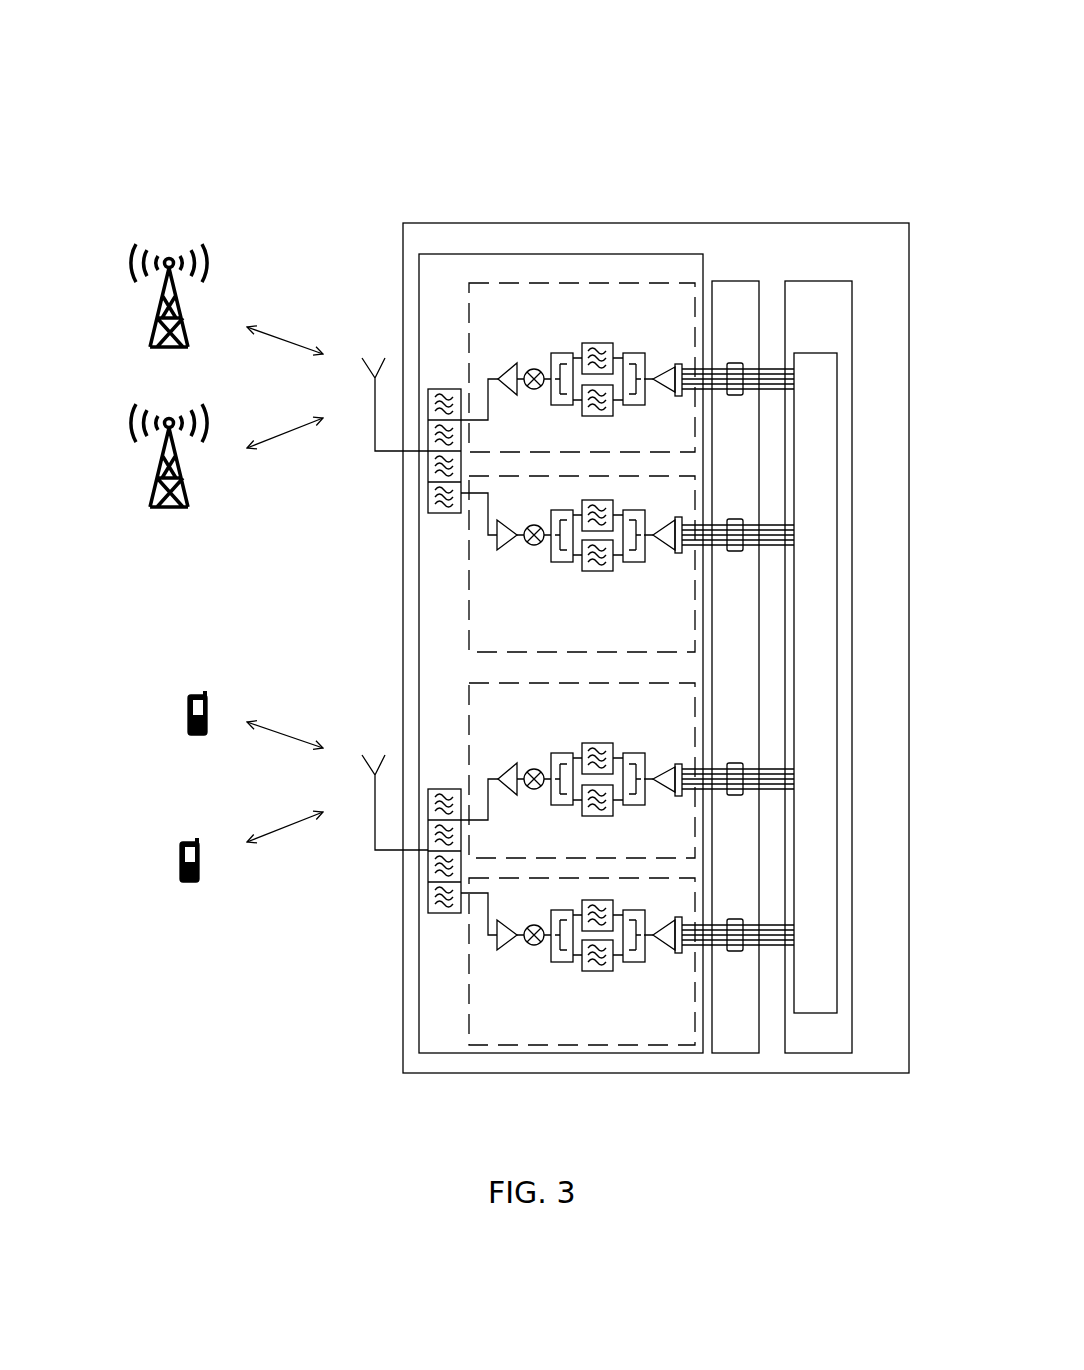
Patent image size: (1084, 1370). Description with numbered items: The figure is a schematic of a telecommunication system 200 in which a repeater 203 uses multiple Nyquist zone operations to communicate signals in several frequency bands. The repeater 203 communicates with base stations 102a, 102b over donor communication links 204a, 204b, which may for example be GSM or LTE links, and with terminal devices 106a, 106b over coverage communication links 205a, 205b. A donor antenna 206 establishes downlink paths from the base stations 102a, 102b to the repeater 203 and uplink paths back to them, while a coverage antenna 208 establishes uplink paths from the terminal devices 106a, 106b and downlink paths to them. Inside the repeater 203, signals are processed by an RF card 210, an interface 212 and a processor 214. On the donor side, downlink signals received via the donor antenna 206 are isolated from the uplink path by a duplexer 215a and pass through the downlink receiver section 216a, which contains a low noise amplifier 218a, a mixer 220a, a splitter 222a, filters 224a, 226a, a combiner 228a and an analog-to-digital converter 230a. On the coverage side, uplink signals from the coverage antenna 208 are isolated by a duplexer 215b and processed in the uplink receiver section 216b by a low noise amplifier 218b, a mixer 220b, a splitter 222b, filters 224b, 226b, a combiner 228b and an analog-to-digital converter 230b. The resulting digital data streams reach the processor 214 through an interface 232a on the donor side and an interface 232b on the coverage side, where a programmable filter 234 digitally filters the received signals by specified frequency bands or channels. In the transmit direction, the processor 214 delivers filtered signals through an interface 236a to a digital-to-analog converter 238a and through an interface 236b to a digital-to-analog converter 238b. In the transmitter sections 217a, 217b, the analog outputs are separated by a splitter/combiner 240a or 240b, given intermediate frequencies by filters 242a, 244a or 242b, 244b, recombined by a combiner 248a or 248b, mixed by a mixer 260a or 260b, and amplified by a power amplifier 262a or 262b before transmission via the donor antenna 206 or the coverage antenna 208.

The telecommunication system 200 is at (698, 76).
The repeater 203 is at (648, 222).
The RF card 210 is at (552, 254).
The interface 212 is at (727, 281).
The processor 214 is at (814, 281).
The programmable filter 234 is at (807, 353).
The base station 102a is at (166, 360).
The base station 102b is at (166, 518).
The terminal device 106a is at (187, 748).
The terminal device 106b is at (180, 895).
The donor communication link 204a is at (285, 314).
The donor communication link 204b is at (285, 462).
The coverage communication link 205a is at (285, 709).
The coverage communication link 205b is at (285, 856).
The donor antenna 206 is at (360, 356).
The coverage antenna 208 is at (360, 750).
The duplexer 215a is at (446, 389).
The duplexer 215b is at (444, 832).
The downlink receiver section 216a is at (462, 608).
The uplink receiver section 216b is at (560, 961).
The transmitter section 217a is at (492, 278).
The transmitter section 217b is at (560, 759).
The low noise amplifier 218a is at (500, 522).
The low noise amplifier 218b is at (521, 920).
The mixer 220a is at (534, 547).
The mixer 220b is at (513, 952).
The splitter 222a is at (563, 562).
The splitter 222b is at (546, 952).
The filter 224a is at (590, 572).
The filter 224b is at (584, 978).
The filter 226a is at (600, 500).
The filter 226b is at (622, 906).
The combiner 228a is at (640, 562).
The combiner 228b is at (623, 952).
The analog-to-digital converter 230a is at (660, 550).
The analog-to-digital converter 230b is at (673, 955).
The interface 232a is at (737, 552).
The interface 232b is at (739, 952).
The interface 236a is at (732, 363).
The interface 236b is at (737, 759).
The digital-to-analog converter 238a is at (673, 365).
The digital-to-analog converter 238b is at (675, 755).
The splitter/combiner 240a is at (635, 353).
The splitter/combiner 240b is at (629, 758).
The filter 242a is at (598, 343).
The filter 242b is at (584, 732).
The filter 244a is at (597, 416).
The filter 244b is at (579, 814).
The combiner 248a is at (560, 353).
The combiner 248b is at (549, 758).
The mixer 260a is at (530, 368).
The mixer 260b is at (513, 755).
The power amplifier 262a is at (512, 398).
The power amplifier 262b is at (501, 803).